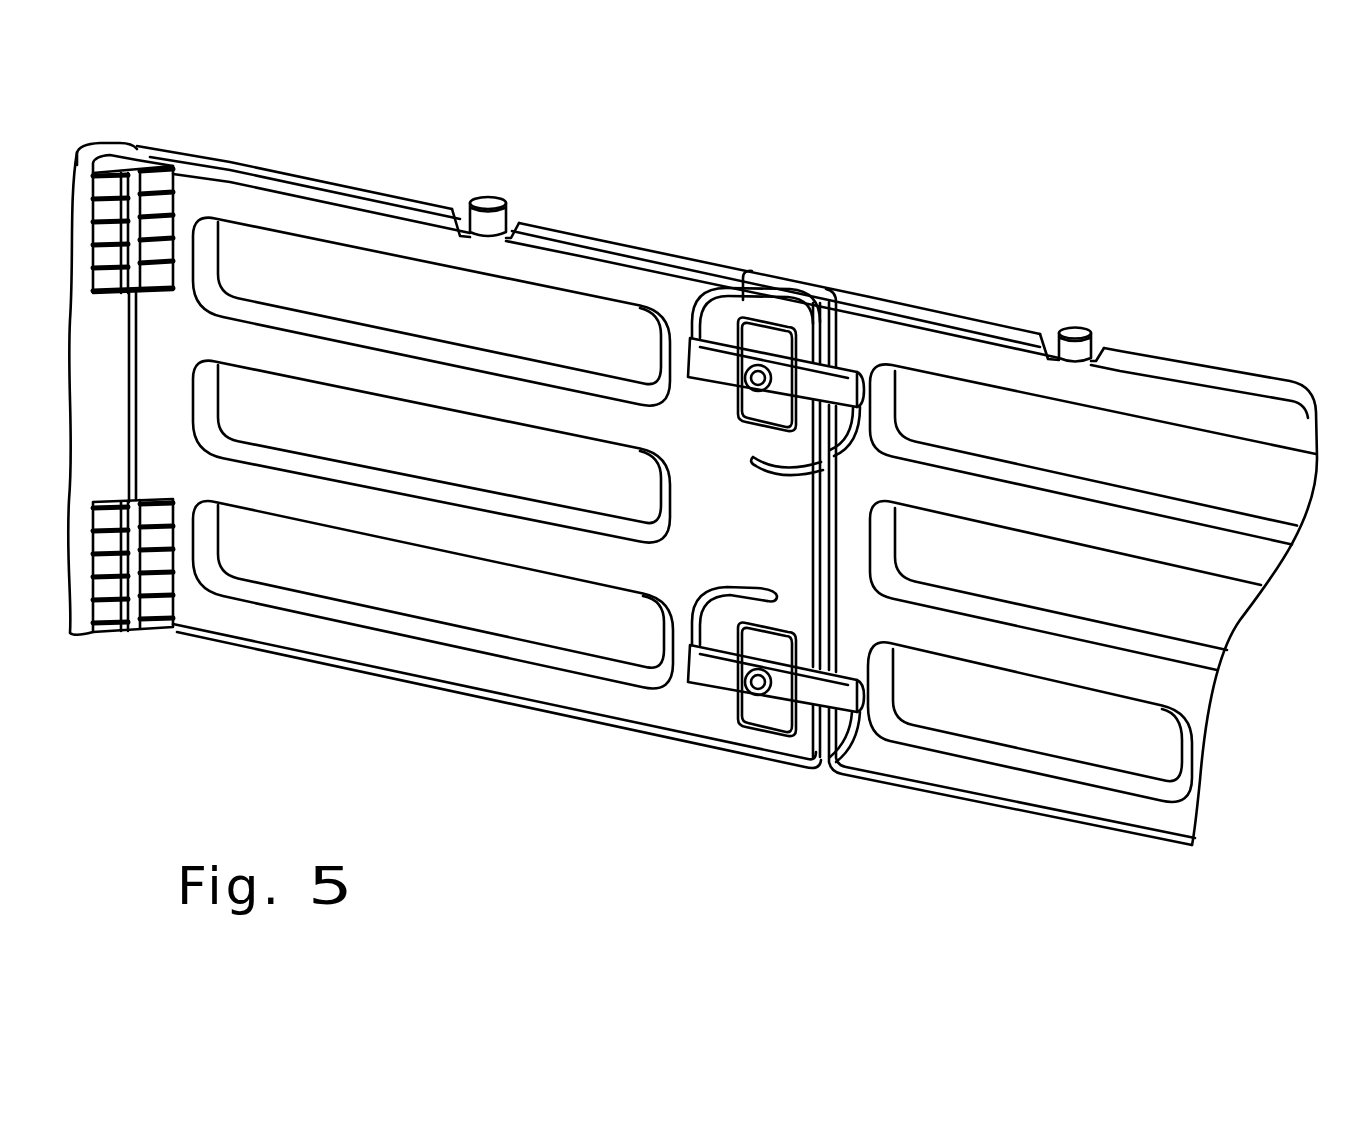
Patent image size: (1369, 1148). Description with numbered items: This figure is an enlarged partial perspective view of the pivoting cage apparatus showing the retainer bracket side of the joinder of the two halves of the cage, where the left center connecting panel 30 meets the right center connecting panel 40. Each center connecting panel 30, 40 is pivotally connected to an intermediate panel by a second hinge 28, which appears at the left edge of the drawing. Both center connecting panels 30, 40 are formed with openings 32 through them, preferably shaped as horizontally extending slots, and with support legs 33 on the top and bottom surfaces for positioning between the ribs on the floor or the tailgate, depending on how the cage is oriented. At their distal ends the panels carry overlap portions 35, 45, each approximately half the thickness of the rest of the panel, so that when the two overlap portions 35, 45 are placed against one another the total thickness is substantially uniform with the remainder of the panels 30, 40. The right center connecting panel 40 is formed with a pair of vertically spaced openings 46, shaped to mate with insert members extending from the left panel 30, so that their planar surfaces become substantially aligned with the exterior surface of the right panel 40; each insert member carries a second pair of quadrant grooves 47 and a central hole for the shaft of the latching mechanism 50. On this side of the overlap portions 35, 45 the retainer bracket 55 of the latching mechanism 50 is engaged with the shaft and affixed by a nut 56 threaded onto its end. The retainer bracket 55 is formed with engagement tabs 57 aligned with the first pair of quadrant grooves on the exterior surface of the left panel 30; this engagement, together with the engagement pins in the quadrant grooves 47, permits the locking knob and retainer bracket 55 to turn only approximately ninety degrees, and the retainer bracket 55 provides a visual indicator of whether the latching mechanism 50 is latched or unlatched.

The second hinge 28 is at (137, 150).
The left center connecting panel 30 is at (320, 208).
The openings 32 is at (564, 297).
The support legs 33 is at (494, 212).
The overlap portion 35 is at (722, 553).
The right center connecting panel 40 is at (997, 358).
The overlap portion 45 is at (797, 286).
The openings 46 is at (753, 410).
The second pair of quadrant grooves 47 is at (693, 303).
The latching mechanism 50 is at (815, 210).
The retainer bracket 55 is at (817, 378).
The nut 56 is at (745, 382).
The engagement tabs 57 is at (864, 389).